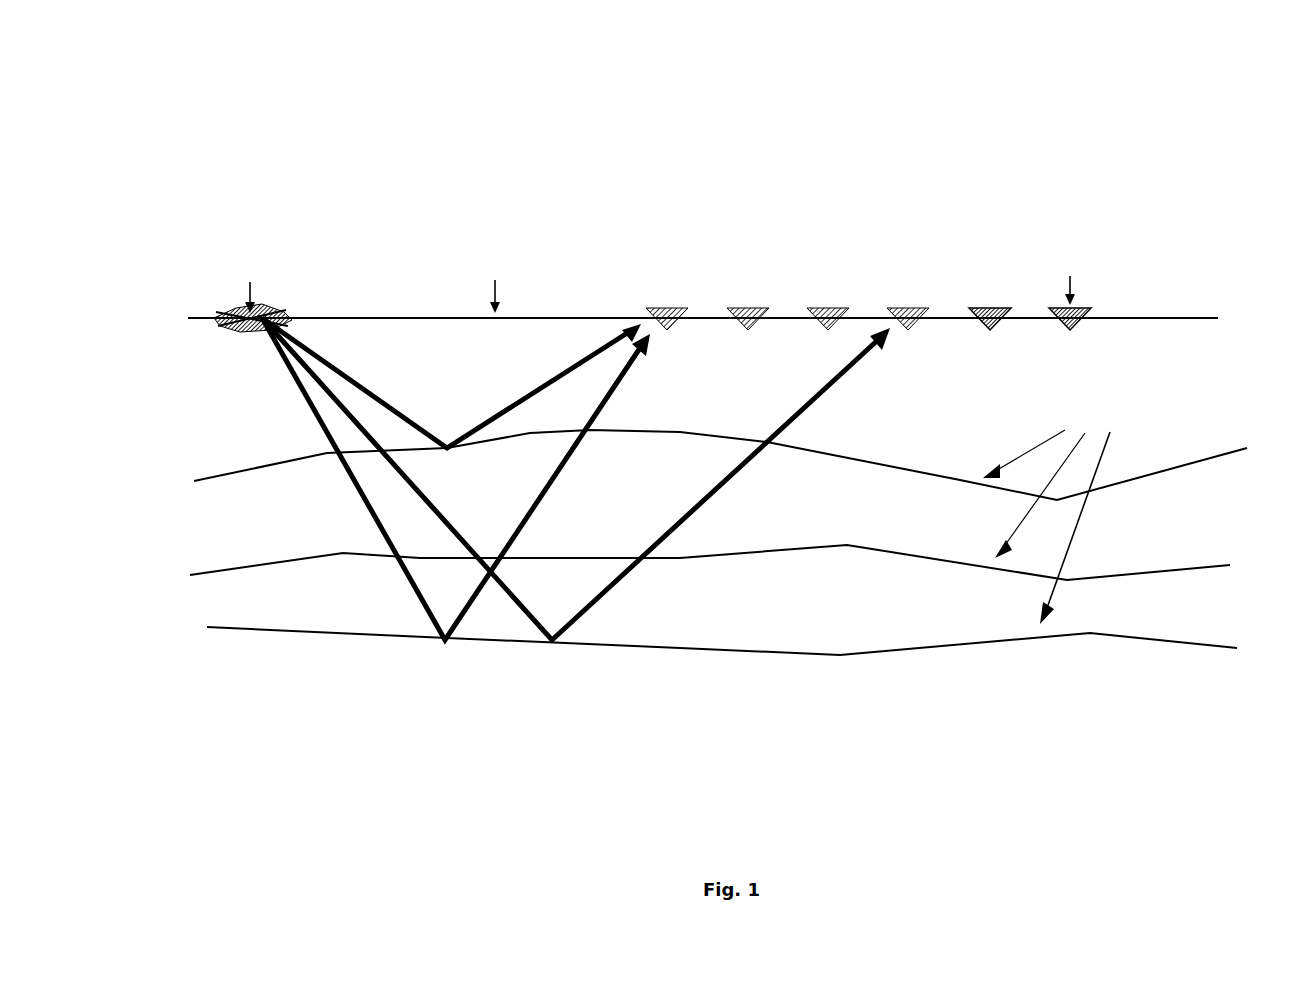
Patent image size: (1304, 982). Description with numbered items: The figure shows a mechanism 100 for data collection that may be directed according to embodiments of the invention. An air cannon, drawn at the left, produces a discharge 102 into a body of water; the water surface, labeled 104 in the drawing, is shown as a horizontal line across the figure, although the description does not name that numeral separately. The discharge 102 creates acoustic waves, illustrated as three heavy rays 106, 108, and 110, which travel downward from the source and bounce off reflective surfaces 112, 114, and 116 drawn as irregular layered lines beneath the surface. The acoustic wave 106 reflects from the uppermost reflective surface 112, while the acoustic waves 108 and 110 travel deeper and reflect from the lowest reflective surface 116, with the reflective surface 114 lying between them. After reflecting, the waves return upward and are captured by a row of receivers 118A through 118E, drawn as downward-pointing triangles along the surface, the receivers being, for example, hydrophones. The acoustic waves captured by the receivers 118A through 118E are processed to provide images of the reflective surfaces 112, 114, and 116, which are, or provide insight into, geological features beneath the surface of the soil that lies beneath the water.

The mechanism for data collection 100 is at (156, 126).
The discharge 102 is at (248, 326).
The surface 104 is at (352, 316).
The acoustic wave 106 is at (394, 406).
The acoustic wave 108 is at (405, 487).
The acoustic wave 110 is at (368, 510).
The reflective surface 112 is at (266, 470).
The reflective surface 114 is at (274, 568).
The reflective surface 116 is at (282, 632).
The receiver 118A is at (662, 306).
The receiver 118E is at (1063, 306).